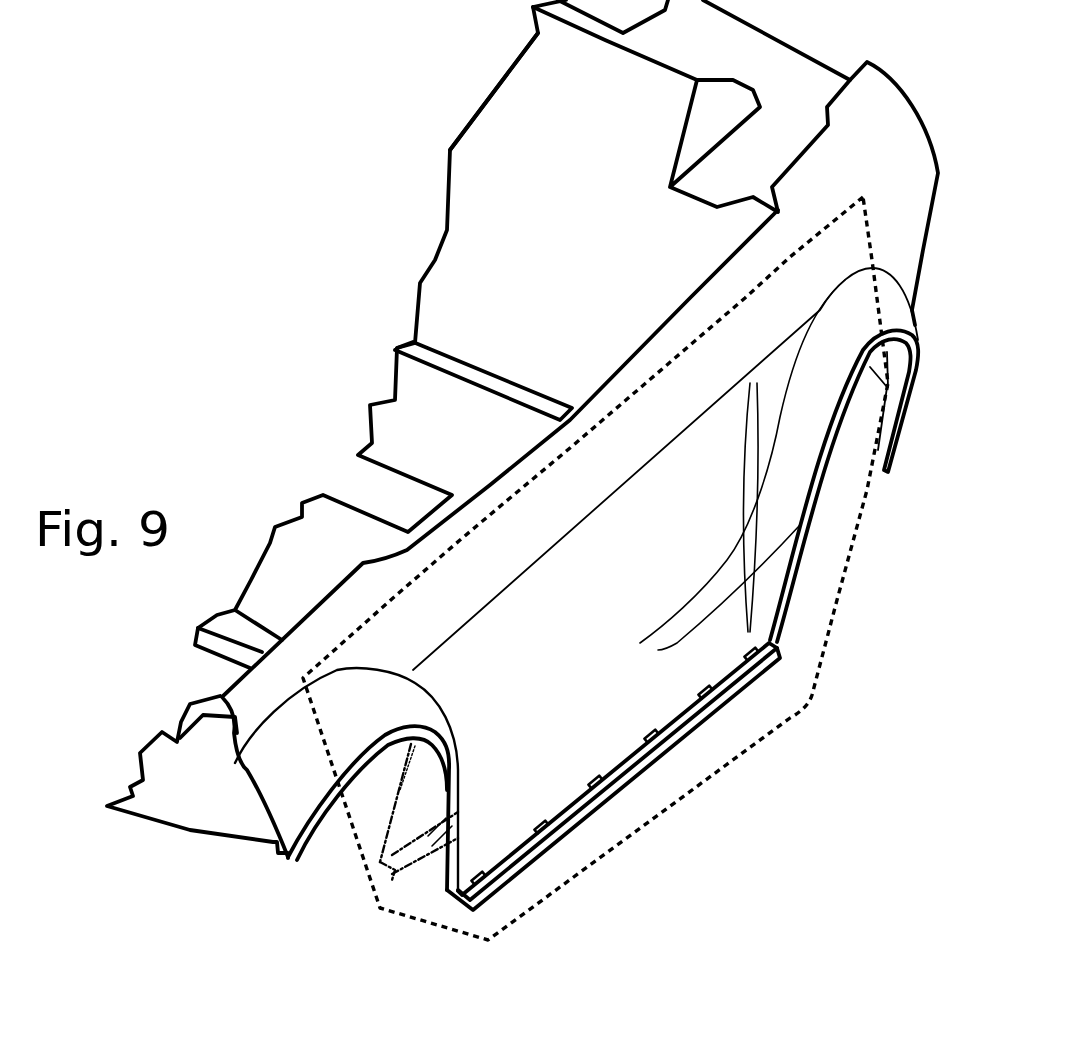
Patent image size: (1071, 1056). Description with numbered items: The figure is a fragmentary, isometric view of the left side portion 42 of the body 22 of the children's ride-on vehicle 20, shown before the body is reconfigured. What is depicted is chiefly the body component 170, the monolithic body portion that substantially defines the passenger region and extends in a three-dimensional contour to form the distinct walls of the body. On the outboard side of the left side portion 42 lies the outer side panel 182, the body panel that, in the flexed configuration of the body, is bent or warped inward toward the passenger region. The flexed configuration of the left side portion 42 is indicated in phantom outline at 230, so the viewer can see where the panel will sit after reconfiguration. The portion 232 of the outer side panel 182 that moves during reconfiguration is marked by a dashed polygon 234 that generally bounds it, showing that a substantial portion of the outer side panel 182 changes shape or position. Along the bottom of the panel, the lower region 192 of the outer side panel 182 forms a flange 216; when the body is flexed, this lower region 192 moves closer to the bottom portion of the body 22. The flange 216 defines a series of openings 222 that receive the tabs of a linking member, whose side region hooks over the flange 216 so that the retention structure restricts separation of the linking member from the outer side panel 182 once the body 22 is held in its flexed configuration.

The children's ride-on vehicle 20 is at (369, 139).
The reconfigured body 22 is at (433, 138).
The body component 170 is at (478, 104).
The left side portion 42 is at (615, 357).
The portion of the outer side panel 232 is at (549, 672).
The dashed polygon 234 is at (468, 935).
The flange 216 is at (745, 686).
The openings 222 is at (474, 878).
The outer side panel 182 is at (677, 578).
The phantom outline of flexed configuration 230 is at (389, 839).
The lower region of outer side panel 192 is at (442, 860).